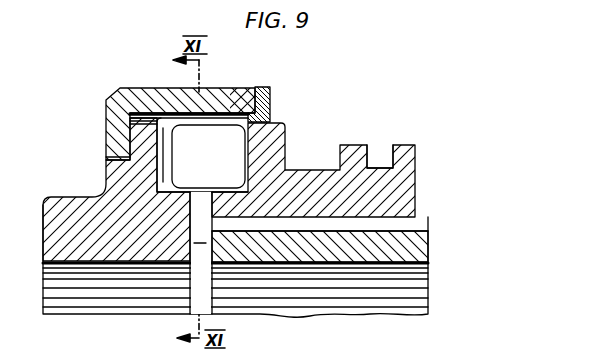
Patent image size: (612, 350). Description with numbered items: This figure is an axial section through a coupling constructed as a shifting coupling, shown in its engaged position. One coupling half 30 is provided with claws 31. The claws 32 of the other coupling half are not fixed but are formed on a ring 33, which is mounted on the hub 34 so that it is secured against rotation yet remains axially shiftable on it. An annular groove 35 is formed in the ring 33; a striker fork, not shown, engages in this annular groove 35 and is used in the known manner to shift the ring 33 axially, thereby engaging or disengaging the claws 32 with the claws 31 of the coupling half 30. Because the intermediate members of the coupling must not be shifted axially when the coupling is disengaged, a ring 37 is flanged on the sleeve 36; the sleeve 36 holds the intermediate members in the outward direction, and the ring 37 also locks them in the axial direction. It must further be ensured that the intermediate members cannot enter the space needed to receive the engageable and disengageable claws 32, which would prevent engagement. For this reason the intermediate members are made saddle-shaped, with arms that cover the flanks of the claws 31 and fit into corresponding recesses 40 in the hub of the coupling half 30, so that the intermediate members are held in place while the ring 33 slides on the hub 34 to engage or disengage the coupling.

The coupling half 30 is at (98, 203).
The claws 31 is at (167, 143).
The claws 32 is at (222, 132).
The ring 33 is at (272, 144).
The hub 34 is at (408, 247).
The annular groove 35 is at (378, 162).
The sleeve 36 is at (155, 93).
The ring 37 is at (273, 98).
The recesses 40 is at (175, 202).